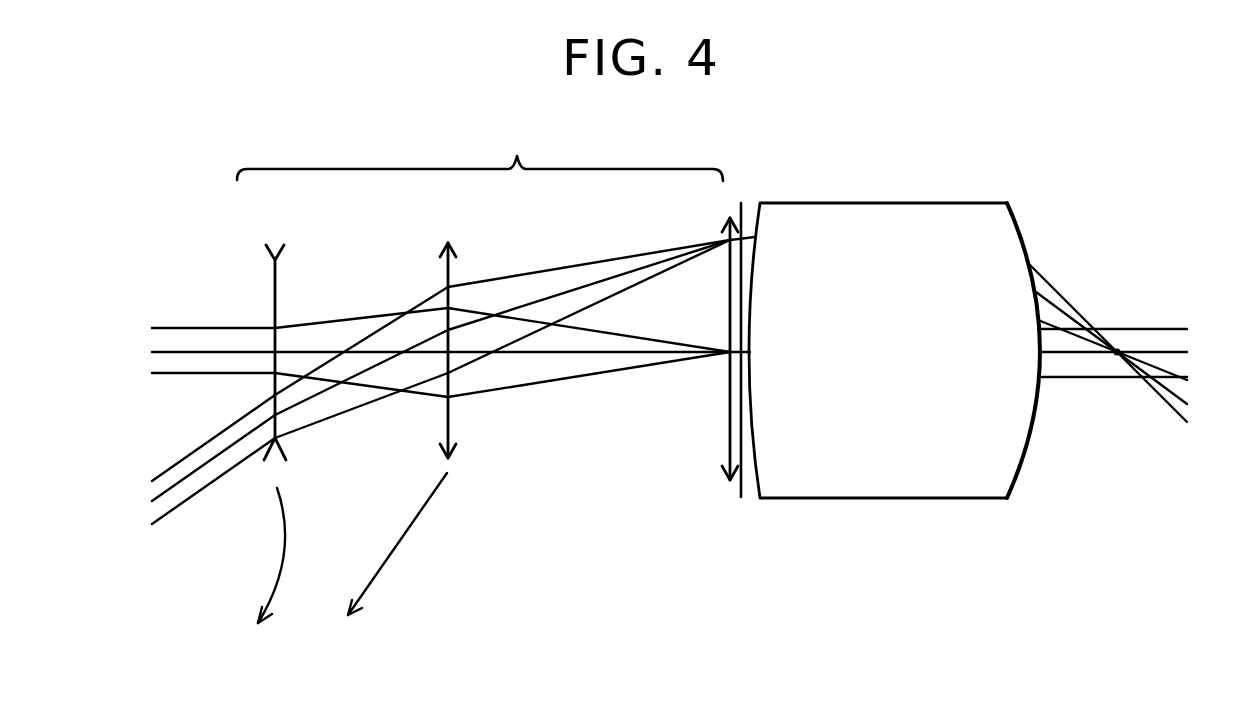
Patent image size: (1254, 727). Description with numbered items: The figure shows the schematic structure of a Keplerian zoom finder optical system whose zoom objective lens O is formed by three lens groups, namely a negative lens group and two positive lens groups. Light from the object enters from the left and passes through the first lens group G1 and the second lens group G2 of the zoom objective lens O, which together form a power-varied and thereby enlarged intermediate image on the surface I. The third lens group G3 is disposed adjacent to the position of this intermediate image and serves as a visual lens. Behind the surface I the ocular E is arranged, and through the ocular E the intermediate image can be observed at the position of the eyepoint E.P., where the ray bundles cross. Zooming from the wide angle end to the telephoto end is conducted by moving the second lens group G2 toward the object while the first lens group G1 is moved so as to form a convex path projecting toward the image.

The zoom objective lens O is at (480, 149).
The first lens group G1 is at (274, 413).
The second lens group G2 is at (410, 410).
The third lens group G3 is at (724, 232).
The intermediate image surface I is at (740, 493).
The ocular E is at (899, 490).
The eyepoint E.P. is at (1117, 352).